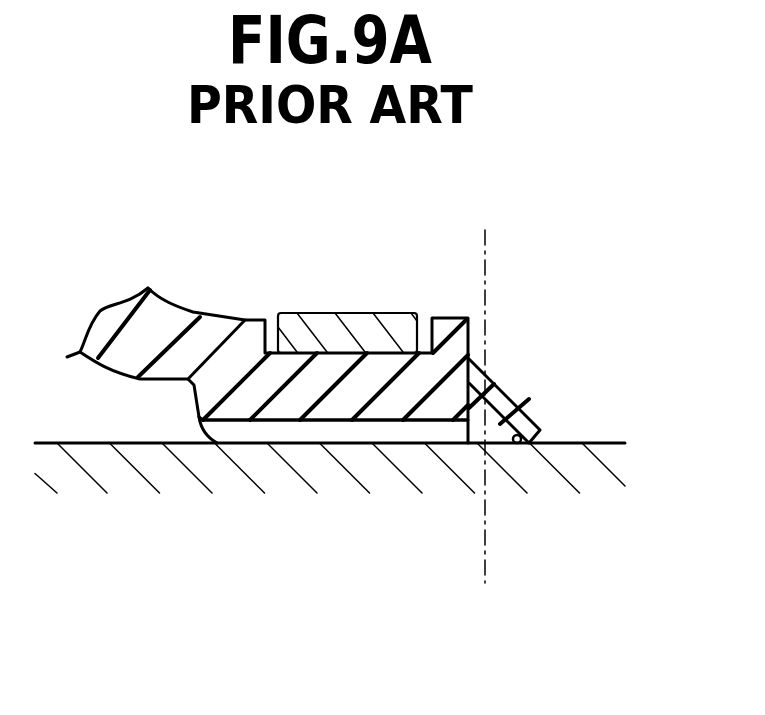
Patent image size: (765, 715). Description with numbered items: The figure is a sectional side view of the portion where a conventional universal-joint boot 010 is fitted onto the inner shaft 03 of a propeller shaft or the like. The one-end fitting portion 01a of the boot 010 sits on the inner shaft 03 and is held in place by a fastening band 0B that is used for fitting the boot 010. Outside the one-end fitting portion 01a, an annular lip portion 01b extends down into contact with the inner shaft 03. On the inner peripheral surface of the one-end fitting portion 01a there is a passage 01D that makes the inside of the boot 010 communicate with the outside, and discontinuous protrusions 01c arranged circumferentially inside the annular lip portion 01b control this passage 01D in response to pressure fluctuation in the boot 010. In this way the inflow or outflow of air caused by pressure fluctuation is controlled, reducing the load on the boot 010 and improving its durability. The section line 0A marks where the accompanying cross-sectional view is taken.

The boot 010 is at (175, 303).
The fastening band 0B is at (302, 317).
The one-end fitting portion 01a is at (333, 380).
The annular lip portion 01b is at (510, 397).
The discontinuous protrusions 01c is at (513, 443).
The passage 01D is at (342, 430).
The inner shaft 03 is at (192, 472).
The section line 0A is at (483, 410).